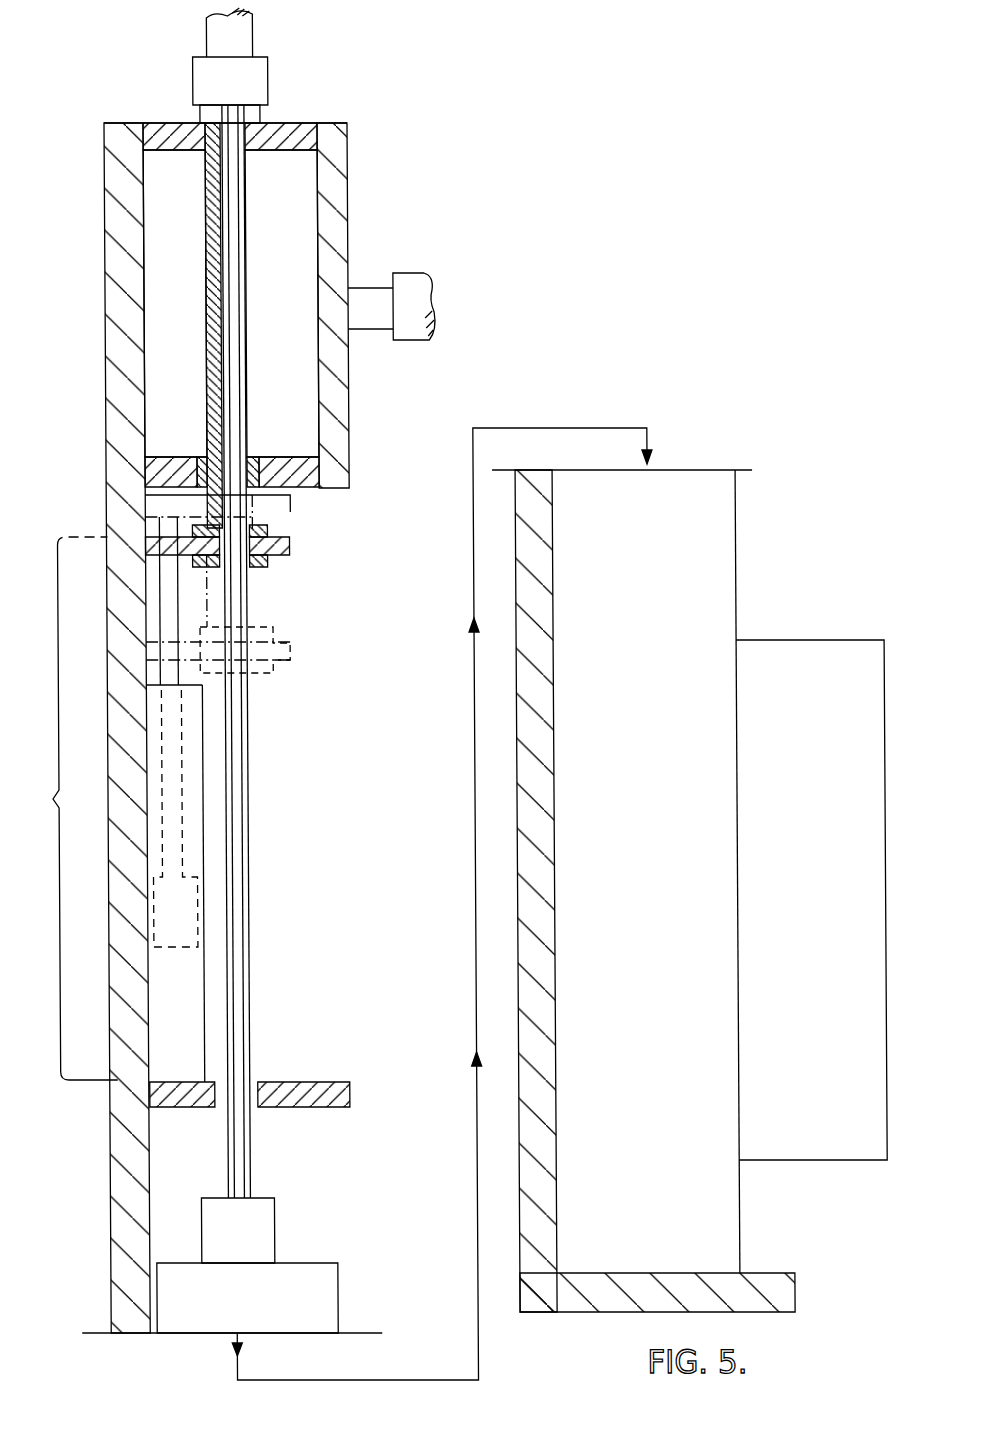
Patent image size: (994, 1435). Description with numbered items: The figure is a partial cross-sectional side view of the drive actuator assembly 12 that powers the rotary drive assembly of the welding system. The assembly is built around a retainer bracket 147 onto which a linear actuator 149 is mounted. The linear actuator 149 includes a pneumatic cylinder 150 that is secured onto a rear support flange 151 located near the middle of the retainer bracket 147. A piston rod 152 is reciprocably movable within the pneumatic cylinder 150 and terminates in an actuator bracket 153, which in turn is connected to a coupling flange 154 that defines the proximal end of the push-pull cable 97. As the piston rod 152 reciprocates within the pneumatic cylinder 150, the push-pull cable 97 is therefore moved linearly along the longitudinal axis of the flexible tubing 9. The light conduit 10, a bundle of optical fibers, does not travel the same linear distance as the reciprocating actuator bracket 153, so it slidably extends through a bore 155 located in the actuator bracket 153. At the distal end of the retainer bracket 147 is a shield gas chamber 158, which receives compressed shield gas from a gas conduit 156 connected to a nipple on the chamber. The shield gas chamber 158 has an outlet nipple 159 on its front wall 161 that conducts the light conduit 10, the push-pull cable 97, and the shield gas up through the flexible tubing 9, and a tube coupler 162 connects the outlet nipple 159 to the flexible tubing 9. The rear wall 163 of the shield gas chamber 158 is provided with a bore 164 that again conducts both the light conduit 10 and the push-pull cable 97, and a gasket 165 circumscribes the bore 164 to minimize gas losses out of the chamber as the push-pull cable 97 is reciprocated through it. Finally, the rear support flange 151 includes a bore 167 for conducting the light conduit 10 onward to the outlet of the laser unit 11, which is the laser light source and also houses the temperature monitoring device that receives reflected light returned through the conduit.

The flexible tubing 9 is at (235, 34).
The light conduit 10 is at (228, 868).
The laser light source 11 is at (658, 963).
The drive actuator assembly 12 is at (68, 808).
The push-pull cable 97 is at (212, 353).
The retainer bracket 147 is at (120, 330).
The linear actuator 149 is at (201, 787).
The pneumatic cylinder 150 is at (149, 840).
The rear support flange 151 is at (329, 1093).
The piston rod 152 is at (162, 617).
The actuator bracket 153 is at (282, 548).
The coupling flange 154 is at (248, 520).
The bore 155 is at (235, 553).
The gas conduit 156 is at (410, 315).
The shield gas chamber 158 is at (293, 195).
The outlet nipple 159 is at (207, 116).
The front wall 161 is at (188, 148).
The tube coupler 162 is at (247, 83).
The rear wall 163 is at (162, 468).
The bore 164 is at (255, 453).
The gasket 165 is at (200, 453).
The bore 167 is at (244, 1092).